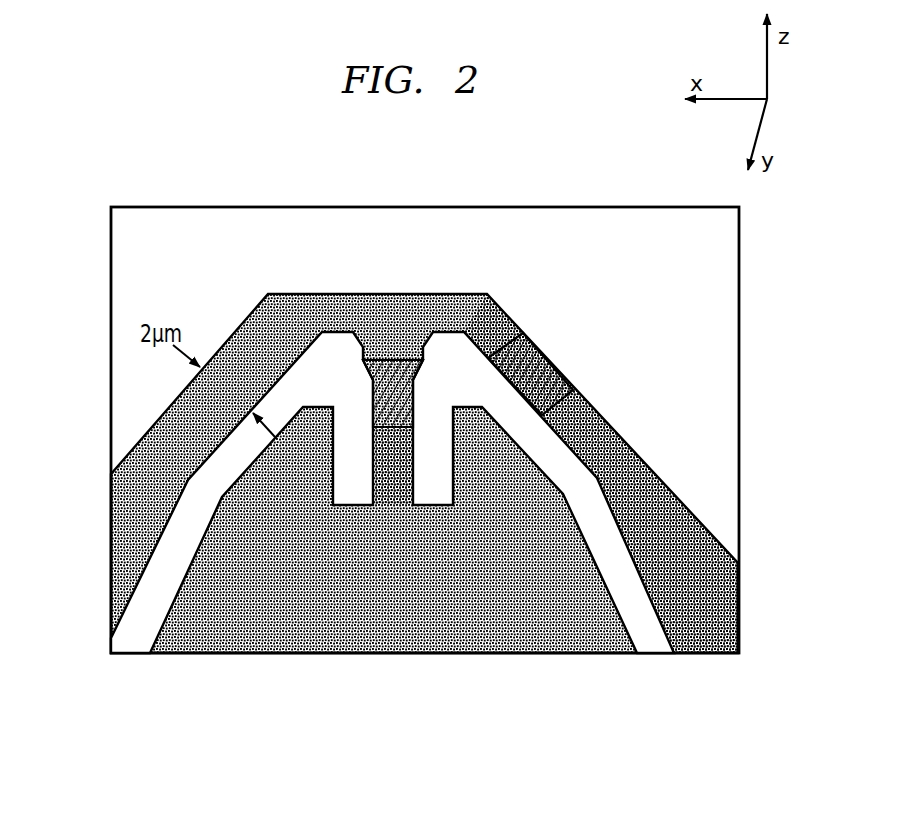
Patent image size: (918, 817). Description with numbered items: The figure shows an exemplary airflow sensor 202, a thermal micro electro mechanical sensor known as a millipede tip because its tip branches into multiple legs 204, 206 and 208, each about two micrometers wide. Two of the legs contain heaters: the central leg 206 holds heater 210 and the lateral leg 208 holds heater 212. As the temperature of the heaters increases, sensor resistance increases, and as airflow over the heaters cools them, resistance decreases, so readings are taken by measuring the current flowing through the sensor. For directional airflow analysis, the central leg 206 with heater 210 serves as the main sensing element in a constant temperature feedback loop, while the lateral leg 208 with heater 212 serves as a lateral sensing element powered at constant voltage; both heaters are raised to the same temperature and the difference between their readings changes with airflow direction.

The airflow sensor 202 is at (592, 306).
The leg 204 is at (132, 505).
The leg 206 is at (393, 482).
The leg 208 is at (602, 432).
The heater 210 is at (396, 380).
The heater 212 is at (560, 367).